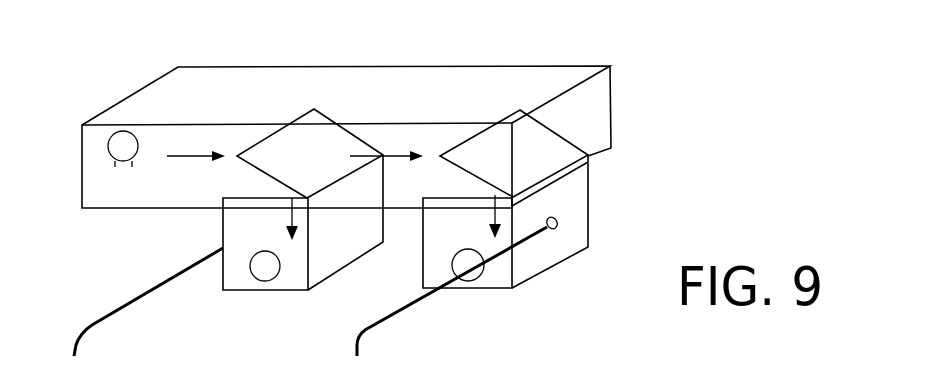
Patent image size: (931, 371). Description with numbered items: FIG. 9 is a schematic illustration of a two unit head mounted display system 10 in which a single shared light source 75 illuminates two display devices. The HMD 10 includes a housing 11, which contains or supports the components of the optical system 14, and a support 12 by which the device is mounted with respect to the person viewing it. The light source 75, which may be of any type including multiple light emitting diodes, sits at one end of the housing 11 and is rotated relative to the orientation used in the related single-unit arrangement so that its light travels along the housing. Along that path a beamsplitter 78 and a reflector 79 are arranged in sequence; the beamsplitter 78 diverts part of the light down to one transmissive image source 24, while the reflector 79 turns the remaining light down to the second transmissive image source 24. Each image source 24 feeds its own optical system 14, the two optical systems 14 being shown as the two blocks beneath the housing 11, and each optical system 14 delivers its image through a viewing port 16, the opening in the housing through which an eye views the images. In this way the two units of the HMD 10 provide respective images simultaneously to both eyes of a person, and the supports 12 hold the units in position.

The head mounted display system 10 is at (122, 63).
The housing 11 is at (612, 84).
The support 12 is at (168, 282).
The optical system 14 is at (219, 299).
The viewing port 16 is at (278, 274).
The image source 24 is at (223, 196).
The light source 75 is at (110, 151).
The beamsplitter 78 is at (323, 110).
The reflector 79 is at (545, 148).